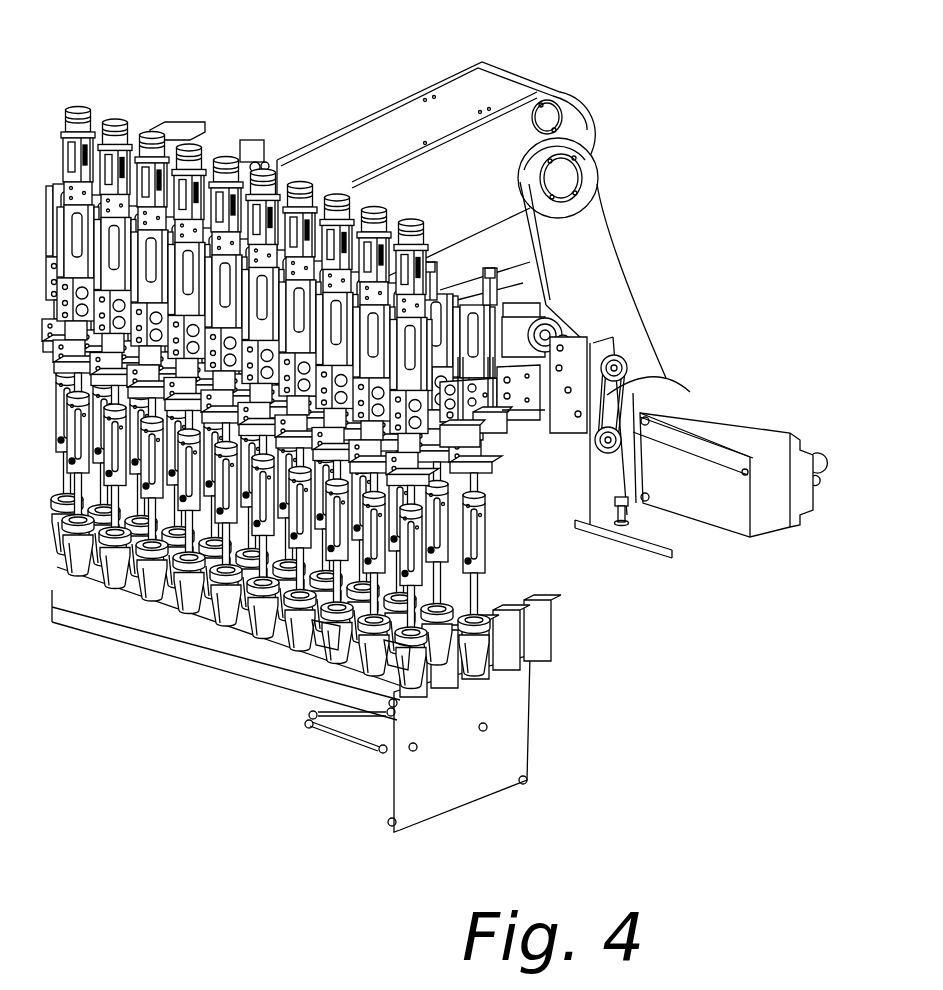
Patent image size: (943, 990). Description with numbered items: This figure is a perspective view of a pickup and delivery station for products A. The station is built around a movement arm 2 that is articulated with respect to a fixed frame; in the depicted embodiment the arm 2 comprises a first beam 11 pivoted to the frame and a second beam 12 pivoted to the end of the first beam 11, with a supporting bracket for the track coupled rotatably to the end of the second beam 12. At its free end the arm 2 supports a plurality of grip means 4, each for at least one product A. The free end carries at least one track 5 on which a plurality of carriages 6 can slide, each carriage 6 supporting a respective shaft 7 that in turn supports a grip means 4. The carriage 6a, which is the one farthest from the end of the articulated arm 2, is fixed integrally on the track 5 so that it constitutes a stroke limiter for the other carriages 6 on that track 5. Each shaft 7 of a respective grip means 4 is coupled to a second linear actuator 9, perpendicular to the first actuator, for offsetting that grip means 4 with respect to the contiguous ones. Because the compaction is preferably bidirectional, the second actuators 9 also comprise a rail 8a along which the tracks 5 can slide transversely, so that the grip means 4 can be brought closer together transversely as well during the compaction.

The movement arm 2 is at (659, 201).
The grip means 4 is at (393, 640).
The track 5 is at (480, 397).
The carriages 6 is at (497, 476).
The carriage 6a is at (491, 498).
The shaft 7 is at (342, 550).
The rail 8a is at (513, 373).
The second linear actuator 9 is at (488, 268).
The first beam 11 is at (603, 278).
The second beam 12 is at (503, 140).
The products A is at (327, 627).